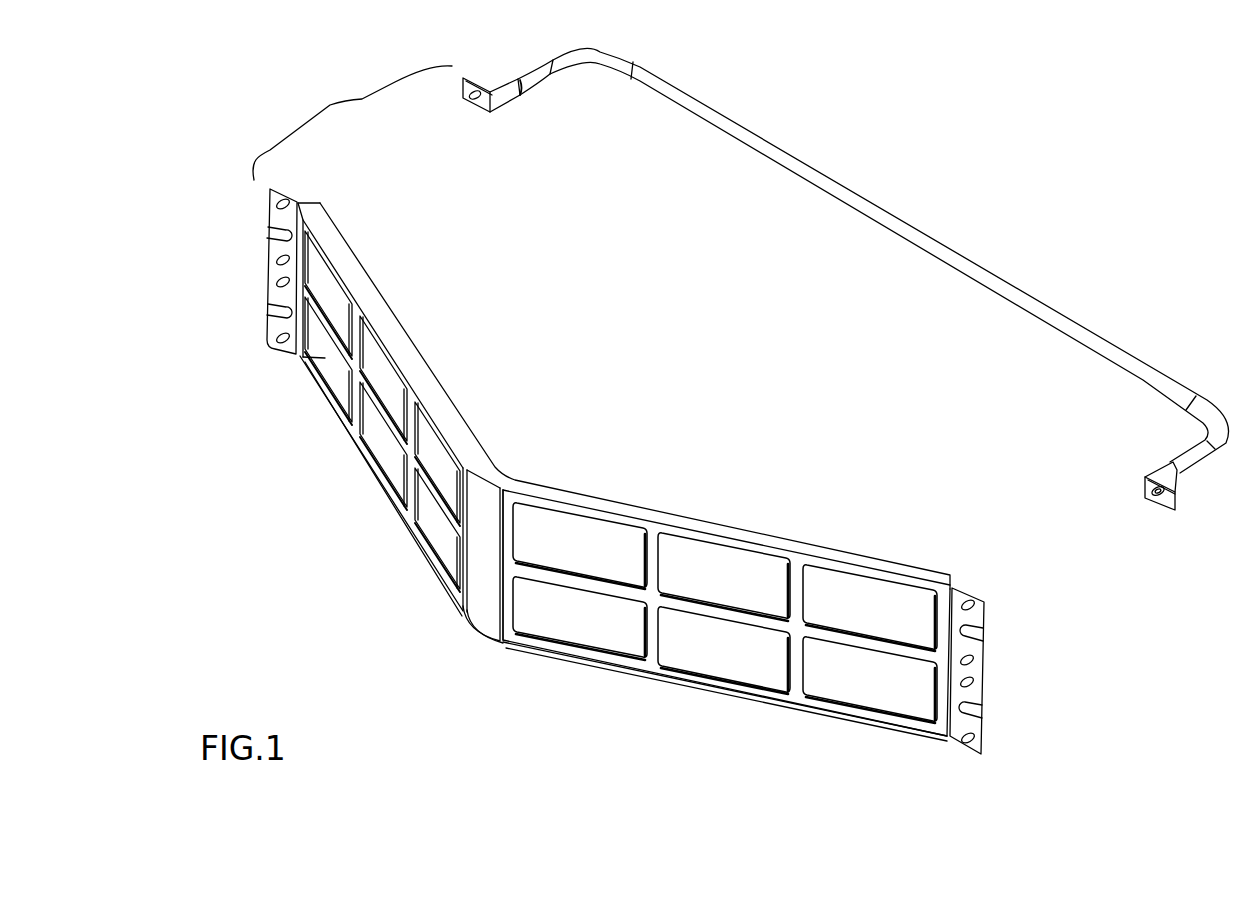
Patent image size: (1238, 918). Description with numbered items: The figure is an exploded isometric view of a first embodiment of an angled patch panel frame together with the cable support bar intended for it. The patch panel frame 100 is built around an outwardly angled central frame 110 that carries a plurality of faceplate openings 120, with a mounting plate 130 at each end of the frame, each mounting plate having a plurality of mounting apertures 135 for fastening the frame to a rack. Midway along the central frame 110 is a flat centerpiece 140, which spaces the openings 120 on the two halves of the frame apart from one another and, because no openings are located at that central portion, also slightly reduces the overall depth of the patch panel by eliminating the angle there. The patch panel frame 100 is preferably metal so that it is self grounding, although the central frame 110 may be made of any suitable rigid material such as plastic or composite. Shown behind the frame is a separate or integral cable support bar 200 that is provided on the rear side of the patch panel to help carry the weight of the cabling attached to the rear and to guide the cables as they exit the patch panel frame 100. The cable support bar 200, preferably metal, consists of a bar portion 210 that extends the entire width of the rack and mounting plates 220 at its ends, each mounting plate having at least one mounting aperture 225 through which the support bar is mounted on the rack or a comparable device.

The patch panel frame 100 is at (644, 490).
The central frame 110 is at (653, 663).
The faceplate openings 120 is at (860, 692).
The mounting plate 130 is at (982, 742).
The mounting apertures 135 is at (925, 725).
The flat centerpiece 140 is at (478, 608).
The cable support bar 200 is at (741, 330).
The bar portion 210 is at (960, 256).
The mounting plates 220 is at (1082, 532).
The mounting aperture 225 is at (1147, 497).